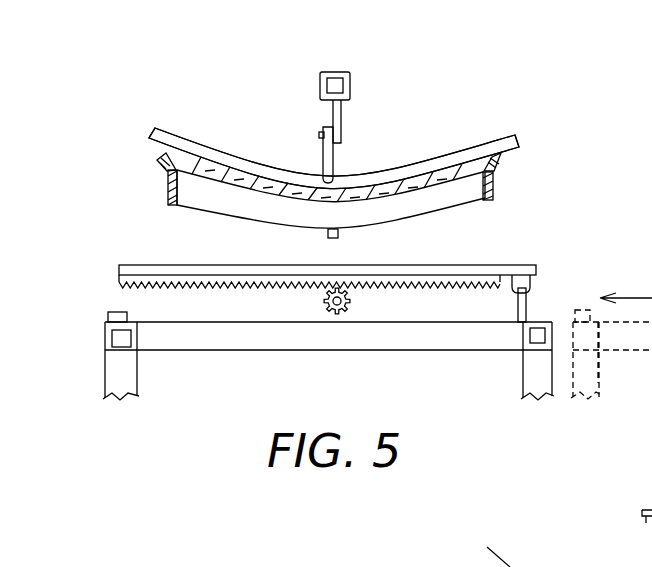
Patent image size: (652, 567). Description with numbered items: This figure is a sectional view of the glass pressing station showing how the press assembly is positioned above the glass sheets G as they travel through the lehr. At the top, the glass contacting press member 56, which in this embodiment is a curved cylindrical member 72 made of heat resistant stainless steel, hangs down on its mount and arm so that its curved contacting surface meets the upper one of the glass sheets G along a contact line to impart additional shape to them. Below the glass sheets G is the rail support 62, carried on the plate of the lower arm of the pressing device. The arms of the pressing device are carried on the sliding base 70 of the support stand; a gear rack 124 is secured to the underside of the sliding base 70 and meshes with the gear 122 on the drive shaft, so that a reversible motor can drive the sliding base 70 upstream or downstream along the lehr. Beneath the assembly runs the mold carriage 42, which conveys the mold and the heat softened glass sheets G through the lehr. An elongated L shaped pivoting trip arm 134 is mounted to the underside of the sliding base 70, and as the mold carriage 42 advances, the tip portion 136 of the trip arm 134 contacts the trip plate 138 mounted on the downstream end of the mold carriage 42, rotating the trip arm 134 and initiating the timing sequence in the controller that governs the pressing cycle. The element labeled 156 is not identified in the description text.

The press member 56 is at (195, 150).
The curved cylindrical member 72 is at (472, 148).
The glass sheets G is at (508, 162).
The rail support 62 is at (339, 231).
The sliding base 70 is at (487, 264).
The gear rack 124 is at (200, 288).
The gear 122 is at (352, 298).
The trip arm 134 is at (525, 302).
The tip portion 136 is at (517, 312).
The mold carriage 42 is at (138, 362).
The trip plate 138 is at (108, 318).
The adjacent station element 156 is at (635, 488).